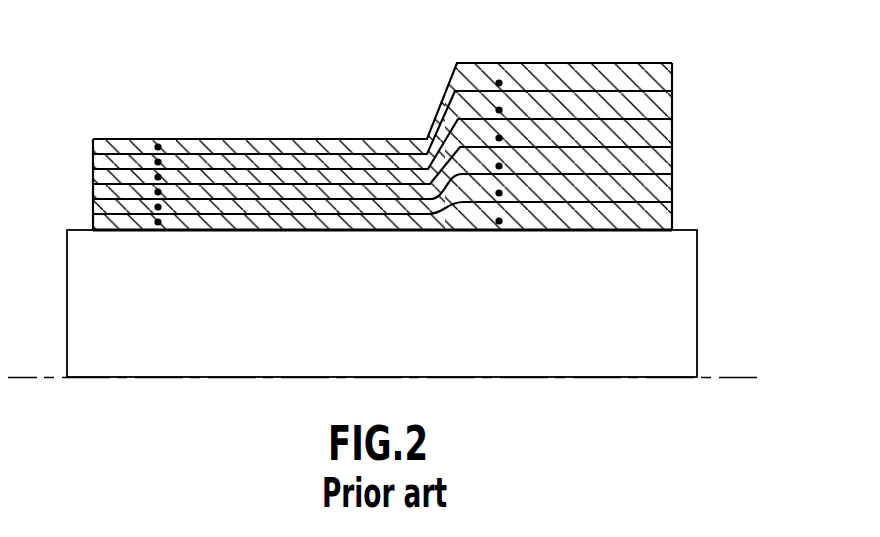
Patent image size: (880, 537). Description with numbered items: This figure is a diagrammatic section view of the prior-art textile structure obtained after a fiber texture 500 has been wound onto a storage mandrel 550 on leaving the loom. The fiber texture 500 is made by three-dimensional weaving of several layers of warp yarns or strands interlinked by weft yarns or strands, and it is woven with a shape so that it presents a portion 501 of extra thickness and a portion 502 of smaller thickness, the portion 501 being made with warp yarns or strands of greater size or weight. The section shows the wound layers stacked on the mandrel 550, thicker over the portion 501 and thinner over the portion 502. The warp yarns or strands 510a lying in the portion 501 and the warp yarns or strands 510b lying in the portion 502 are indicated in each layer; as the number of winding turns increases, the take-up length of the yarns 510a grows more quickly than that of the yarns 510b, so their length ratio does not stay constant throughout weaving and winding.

The fiber texture 500 is at (698, 94).
The portion of extra thickness 501 is at (597, 77).
The portion of smaller thickness 502 is at (287, 146).
The warp yarns or strands in the portion of extra thickness 510a is at (500, 79).
The warp yarns or strands in the portion of smaller thickness 510b is at (158, 143).
The storage mandrel 550 is at (642, 285).